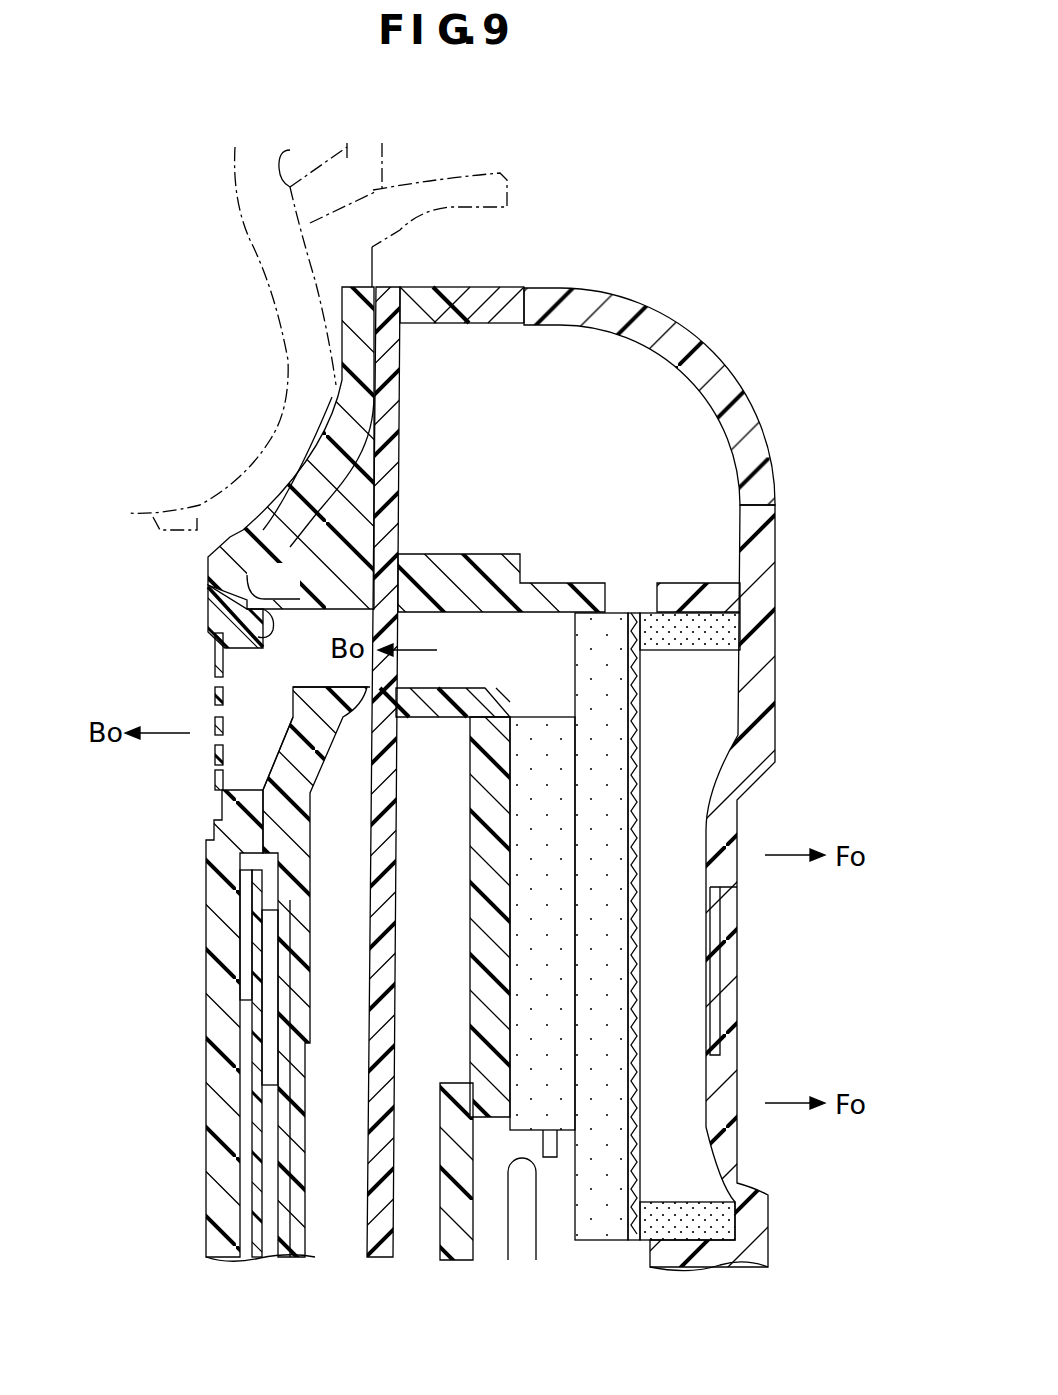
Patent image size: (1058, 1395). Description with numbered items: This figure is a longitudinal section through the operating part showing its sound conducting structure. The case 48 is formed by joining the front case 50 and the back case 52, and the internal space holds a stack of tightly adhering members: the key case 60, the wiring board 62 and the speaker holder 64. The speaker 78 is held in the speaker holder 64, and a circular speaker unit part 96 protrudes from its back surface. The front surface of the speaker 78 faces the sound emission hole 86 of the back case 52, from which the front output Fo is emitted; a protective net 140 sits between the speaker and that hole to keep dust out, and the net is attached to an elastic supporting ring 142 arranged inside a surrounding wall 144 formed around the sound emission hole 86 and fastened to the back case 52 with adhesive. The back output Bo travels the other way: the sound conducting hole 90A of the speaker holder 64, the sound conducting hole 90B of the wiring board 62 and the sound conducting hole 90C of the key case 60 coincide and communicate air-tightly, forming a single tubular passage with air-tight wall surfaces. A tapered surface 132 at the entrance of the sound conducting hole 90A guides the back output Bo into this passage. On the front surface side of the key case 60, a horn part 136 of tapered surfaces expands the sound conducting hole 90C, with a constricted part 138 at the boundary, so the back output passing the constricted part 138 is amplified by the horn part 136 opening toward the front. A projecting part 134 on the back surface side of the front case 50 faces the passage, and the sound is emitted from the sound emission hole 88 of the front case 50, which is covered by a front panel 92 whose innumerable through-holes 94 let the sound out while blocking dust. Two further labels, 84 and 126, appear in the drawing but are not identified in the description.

The case 48 is at (660, 236).
The front case 50 is at (400, 362).
The back case 52 is at (634, 308).
The key case 60 is at (273, 827).
The wiring board 62 is at (382, 1262).
The speaker holder 64 is at (462, 1262).
The speaker 78 is at (605, 1240).
The partition plate 84 is at (745, 557).
The sound emission hole 86 is at (725, 882).
The sound emission hole 88 is at (227, 793).
The sound conducting hole 90A is at (345, 415).
The sound conducting hole 90B is at (465, 555).
The sound conducting hole 90C is at (230, 560).
The front panel 92 is at (215, 648).
The through-holes 94 is at (218, 692).
The speaker unit part 96 is at (541, 1117).
The flow passage 126 is at (317, 683).
The tapered surface 132 is at (503, 705).
The projecting part 134 is at (207, 600).
The horn part 136 is at (283, 753).
The constricted part 138 is at (213, 663).
The protective net 140 is at (640, 985).
The supporting ring 142 is at (693, 1200).
The surrounding wall 144 is at (733, 610).